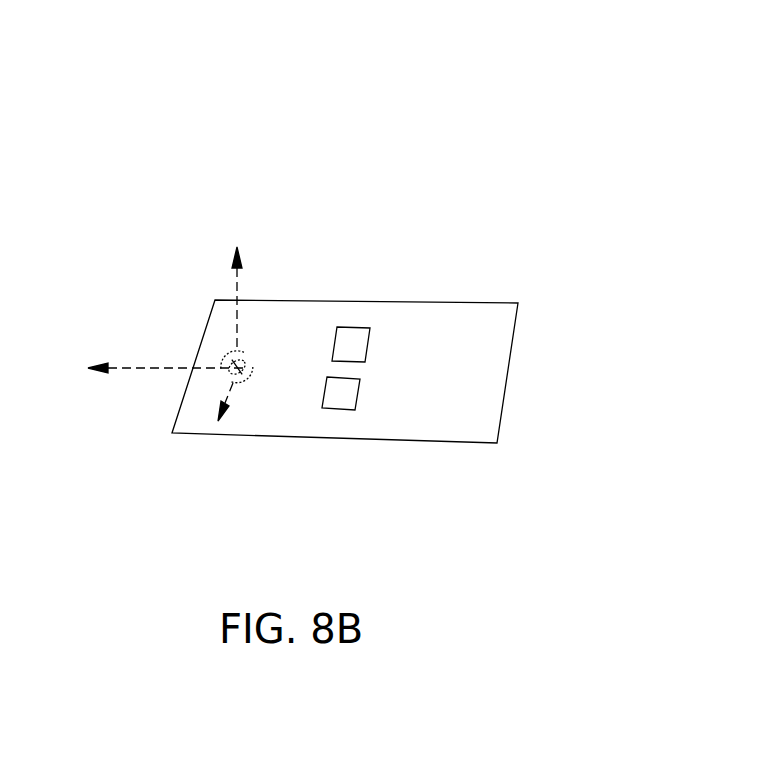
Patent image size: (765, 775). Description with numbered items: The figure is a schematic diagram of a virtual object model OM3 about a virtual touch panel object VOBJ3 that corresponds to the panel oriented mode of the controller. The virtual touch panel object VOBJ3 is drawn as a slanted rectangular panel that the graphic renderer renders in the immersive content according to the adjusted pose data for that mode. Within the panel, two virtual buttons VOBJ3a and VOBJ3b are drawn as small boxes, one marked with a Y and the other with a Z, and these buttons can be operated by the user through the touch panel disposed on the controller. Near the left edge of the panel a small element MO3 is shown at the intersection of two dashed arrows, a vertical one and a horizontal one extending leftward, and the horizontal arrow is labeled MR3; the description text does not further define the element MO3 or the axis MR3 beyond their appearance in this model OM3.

The virtual object model OM3 is at (502, 180).
The motion axis / movement range MR3 is at (128, 370).
The virtual touch panel object VOBJ3 is at (400, 302).
The movable object MO3 is at (237, 353).
The virtual button VOBJ3b is at (370, 345).
The virtual button VOBJ3a is at (360, 393).